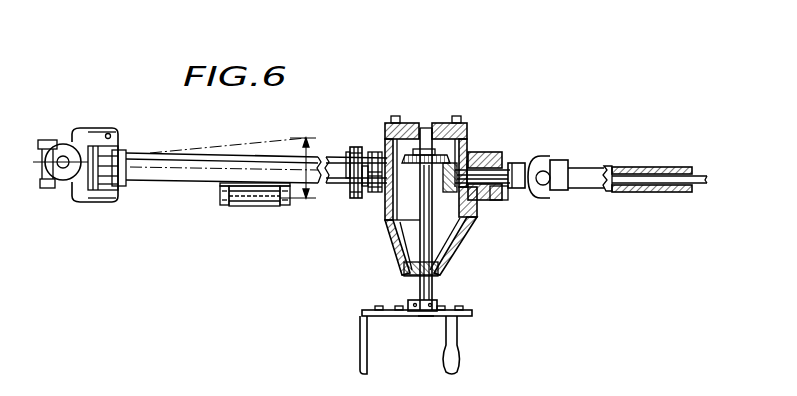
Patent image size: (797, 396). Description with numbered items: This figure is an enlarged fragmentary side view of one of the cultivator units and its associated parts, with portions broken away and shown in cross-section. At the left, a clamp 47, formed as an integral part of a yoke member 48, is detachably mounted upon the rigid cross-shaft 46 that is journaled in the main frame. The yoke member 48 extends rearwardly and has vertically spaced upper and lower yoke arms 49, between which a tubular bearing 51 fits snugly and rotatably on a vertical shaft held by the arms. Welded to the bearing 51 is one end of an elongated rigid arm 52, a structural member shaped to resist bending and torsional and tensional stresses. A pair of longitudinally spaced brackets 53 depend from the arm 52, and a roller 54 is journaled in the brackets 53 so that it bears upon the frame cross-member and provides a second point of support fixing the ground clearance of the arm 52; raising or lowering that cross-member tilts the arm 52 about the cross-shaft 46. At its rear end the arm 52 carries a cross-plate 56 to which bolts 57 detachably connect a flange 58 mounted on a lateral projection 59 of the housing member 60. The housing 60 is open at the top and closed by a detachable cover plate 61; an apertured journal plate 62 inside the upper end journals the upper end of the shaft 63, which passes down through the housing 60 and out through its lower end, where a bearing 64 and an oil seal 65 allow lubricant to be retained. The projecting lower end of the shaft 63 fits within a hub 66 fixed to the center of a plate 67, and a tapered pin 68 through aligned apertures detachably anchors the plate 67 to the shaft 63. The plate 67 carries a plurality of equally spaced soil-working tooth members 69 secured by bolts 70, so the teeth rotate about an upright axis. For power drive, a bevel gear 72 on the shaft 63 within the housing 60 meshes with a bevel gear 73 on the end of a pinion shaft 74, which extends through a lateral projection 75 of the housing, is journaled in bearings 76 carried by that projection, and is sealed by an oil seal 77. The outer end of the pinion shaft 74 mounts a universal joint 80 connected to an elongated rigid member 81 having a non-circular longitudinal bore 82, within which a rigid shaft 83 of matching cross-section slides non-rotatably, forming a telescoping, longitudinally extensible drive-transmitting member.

The cross-shaft 46 is at (64, 182).
The clamp 47 is at (49, 140).
The yoke member 48 is at (76, 130).
The yoke arm 49 is at (100, 131).
The tubular bearing 51 is at (106, 192).
The arm 52 is at (161, 183).
The bracket 53 is at (224, 206).
The roller 54 is at (254, 196).
The cross-plate 56 is at (346, 186).
The bolt 57 is at (348, 152).
The flange 58 is at (358, 146).
The lateral projection 59 is at (373, 193).
The housing member 60 is at (392, 225).
The cover plate 61 is at (408, 122).
The journal plate 62 is at (445, 124).
The shaft 63 is at (450, 234).
The bearing 64 is at (452, 260).
The oil seal 65 is at (439, 277).
The hub 66 is at (408, 301).
The plate 67 is at (472, 313).
The tapered pin 68 is at (421, 317).
The tooth member 69 is at (360, 338).
The bolt 70 is at (374, 308).
The bevel gear 72 is at (478, 152).
The bevel gear 73 is at (470, 206).
The pinion shaft 74 is at (518, 163).
The lateral projection 75 is at (488, 153).
The bearing 76 is at (502, 197).
The oil seal 77 is at (532, 160).
The universal joint 80 is at (561, 161).
The elongated rigid member 81 is at (591, 188).
The longitudinal bore 82 is at (614, 191).
The rigid shaft 83 is at (700, 186).